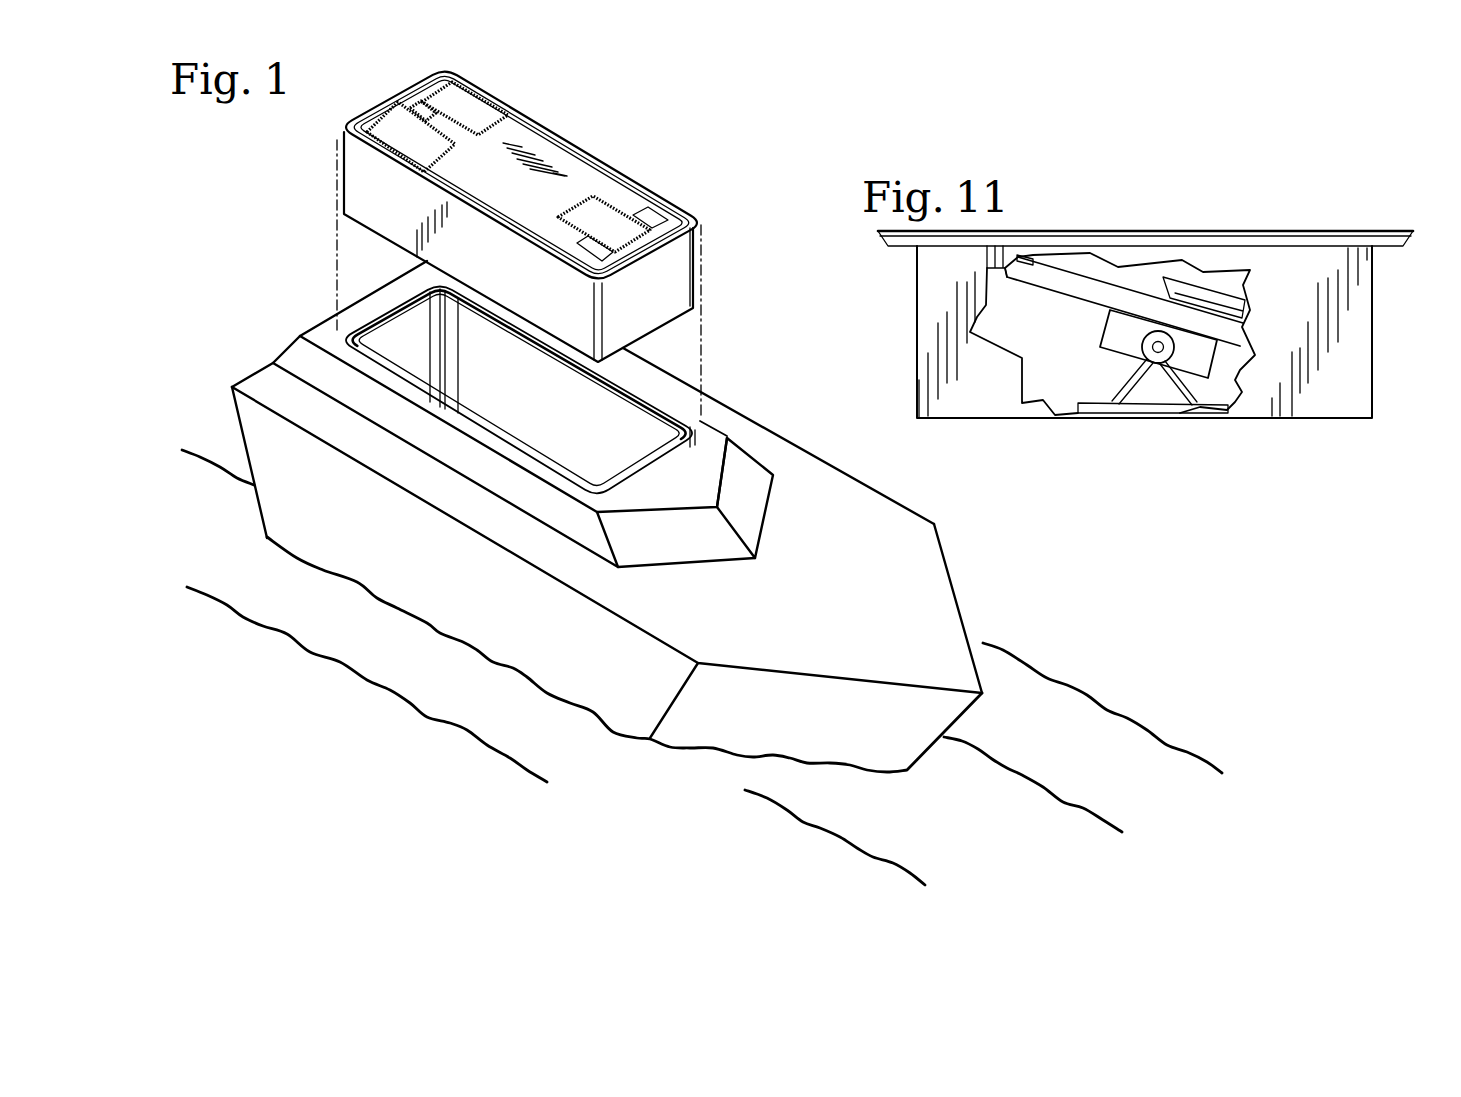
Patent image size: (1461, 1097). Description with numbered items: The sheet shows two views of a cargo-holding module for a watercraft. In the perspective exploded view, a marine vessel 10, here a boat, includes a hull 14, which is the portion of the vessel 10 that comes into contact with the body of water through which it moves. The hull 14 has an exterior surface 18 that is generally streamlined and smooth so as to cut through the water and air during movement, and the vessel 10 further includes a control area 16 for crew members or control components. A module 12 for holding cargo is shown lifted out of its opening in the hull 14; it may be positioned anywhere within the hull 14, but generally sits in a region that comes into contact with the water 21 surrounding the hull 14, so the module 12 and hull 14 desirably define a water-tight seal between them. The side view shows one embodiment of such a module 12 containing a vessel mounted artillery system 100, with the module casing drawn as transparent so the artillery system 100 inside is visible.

In FIG. 1, the marine vessel 10 is at (898, 525).
In FIG. 1, the module 12 is at (560, 155).
In FIG. 11, the module 12 is at (1362, 359).
In FIG. 1, the hull 14 is at (938, 600).
In FIG. 1, the control area 16 is at (748, 482).
In FIG. 1, the exterior surface 18 is at (840, 492).
In FIG. 1, the water 21 is at (1050, 678).
In FIG. 11, the vessel mounted artillery system 100 is at (1112, 330).